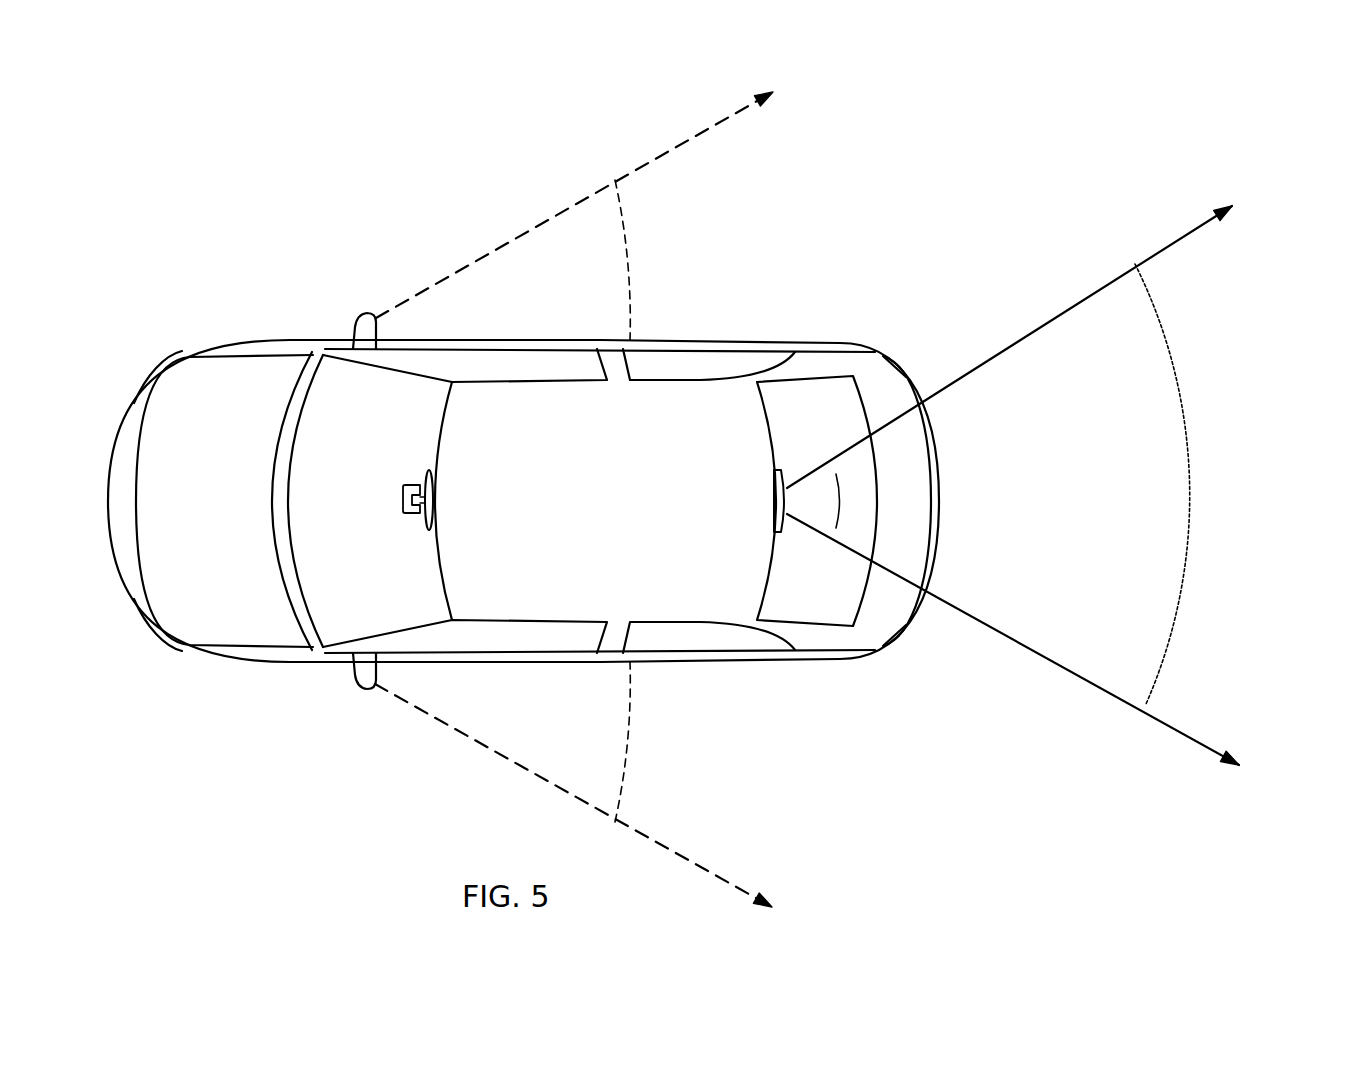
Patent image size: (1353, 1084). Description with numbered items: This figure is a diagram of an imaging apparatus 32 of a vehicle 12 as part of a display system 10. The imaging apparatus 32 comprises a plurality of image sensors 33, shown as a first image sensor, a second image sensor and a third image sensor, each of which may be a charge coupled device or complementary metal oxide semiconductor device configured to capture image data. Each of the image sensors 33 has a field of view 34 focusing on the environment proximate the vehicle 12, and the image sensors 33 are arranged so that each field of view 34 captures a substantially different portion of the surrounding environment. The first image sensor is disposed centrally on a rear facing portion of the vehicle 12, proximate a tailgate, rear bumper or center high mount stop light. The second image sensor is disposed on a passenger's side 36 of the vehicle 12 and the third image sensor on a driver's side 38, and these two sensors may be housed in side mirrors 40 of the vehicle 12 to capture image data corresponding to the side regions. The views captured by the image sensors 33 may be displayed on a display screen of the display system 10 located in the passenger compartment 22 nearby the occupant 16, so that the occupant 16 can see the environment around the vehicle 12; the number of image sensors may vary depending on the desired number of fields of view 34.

The display system 10 is at (523, 432).
The vehicle 12 is at (207, 382).
The occupant 16 is at (371, 467).
The passenger compartment 22 is at (427, 472).
The imaging apparatus 32 is at (523, 493).
The image sensors 33 is at (786, 503).
The field of view 34 is at (632, 258).
The passenger's side 36 is at (340, 310).
The driver's side 38 is at (295, 682).
The side mirrors 40 is at (376, 315).